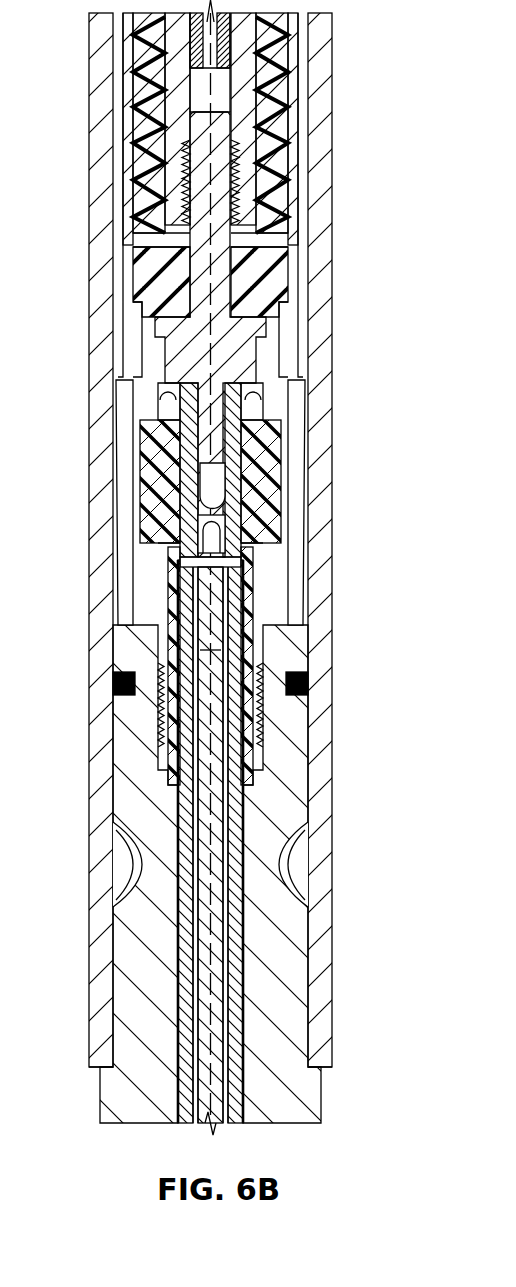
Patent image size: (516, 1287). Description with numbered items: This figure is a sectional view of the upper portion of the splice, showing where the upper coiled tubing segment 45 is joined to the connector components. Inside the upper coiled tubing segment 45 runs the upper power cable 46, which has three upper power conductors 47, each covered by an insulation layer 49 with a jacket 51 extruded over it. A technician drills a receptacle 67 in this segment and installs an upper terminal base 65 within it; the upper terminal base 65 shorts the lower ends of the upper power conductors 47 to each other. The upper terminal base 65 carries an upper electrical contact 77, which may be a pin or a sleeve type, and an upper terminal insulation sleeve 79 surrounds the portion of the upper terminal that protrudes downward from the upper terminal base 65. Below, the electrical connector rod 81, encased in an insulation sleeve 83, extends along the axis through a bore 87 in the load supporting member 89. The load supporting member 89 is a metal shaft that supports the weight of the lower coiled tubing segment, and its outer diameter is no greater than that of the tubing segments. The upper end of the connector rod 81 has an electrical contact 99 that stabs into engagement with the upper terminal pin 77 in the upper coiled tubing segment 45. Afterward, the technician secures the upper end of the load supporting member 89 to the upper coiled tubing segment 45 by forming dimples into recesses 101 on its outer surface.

The upper coiled tubing segment 45 is at (327, 672).
The upper power cable 46 is at (305, 89).
The upper power conductors 47 is at (172, 163).
The insulation layer 49 is at (153, 200).
The jacket 51 is at (170, 98).
The upper terminal base 65 is at (220, 193).
The receptacle 67 is at (222, 90).
The upper electrical contact 77 is at (213, 467).
The upper terminal insulation sleeve 79 is at (152, 445).
The electrical connector rod 81 is at (202, 1077).
The insulation sleeve 83 is at (180, 980).
The bore 87 is at (223, 1090).
The load supporting member 89 is at (122, 1040).
The electrical contact 99 is at (232, 548).
The recesses 101 is at (125, 885).